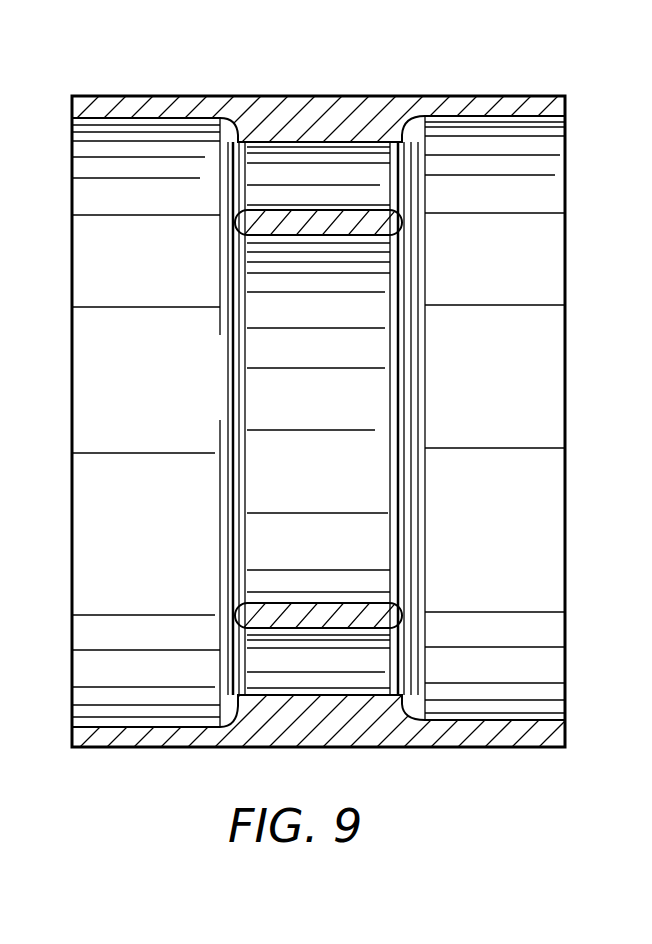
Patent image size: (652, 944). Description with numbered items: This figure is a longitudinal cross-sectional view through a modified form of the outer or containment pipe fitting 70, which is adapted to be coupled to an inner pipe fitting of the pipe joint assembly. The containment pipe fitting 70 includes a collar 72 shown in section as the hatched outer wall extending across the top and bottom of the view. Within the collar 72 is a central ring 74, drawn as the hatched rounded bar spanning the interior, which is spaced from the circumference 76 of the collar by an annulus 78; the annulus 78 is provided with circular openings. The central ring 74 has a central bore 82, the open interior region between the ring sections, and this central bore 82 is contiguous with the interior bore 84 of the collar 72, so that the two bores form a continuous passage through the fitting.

The outer or containment pipe fitting 70 is at (462, 84).
The collar 72 is at (246, 106).
The central ring 74 is at (385, 225).
The circumference 76 is at (338, 92).
The annulus 78 is at (360, 207).
The central bore 82 is at (340, 463).
The interior bore 84 is at (528, 365).